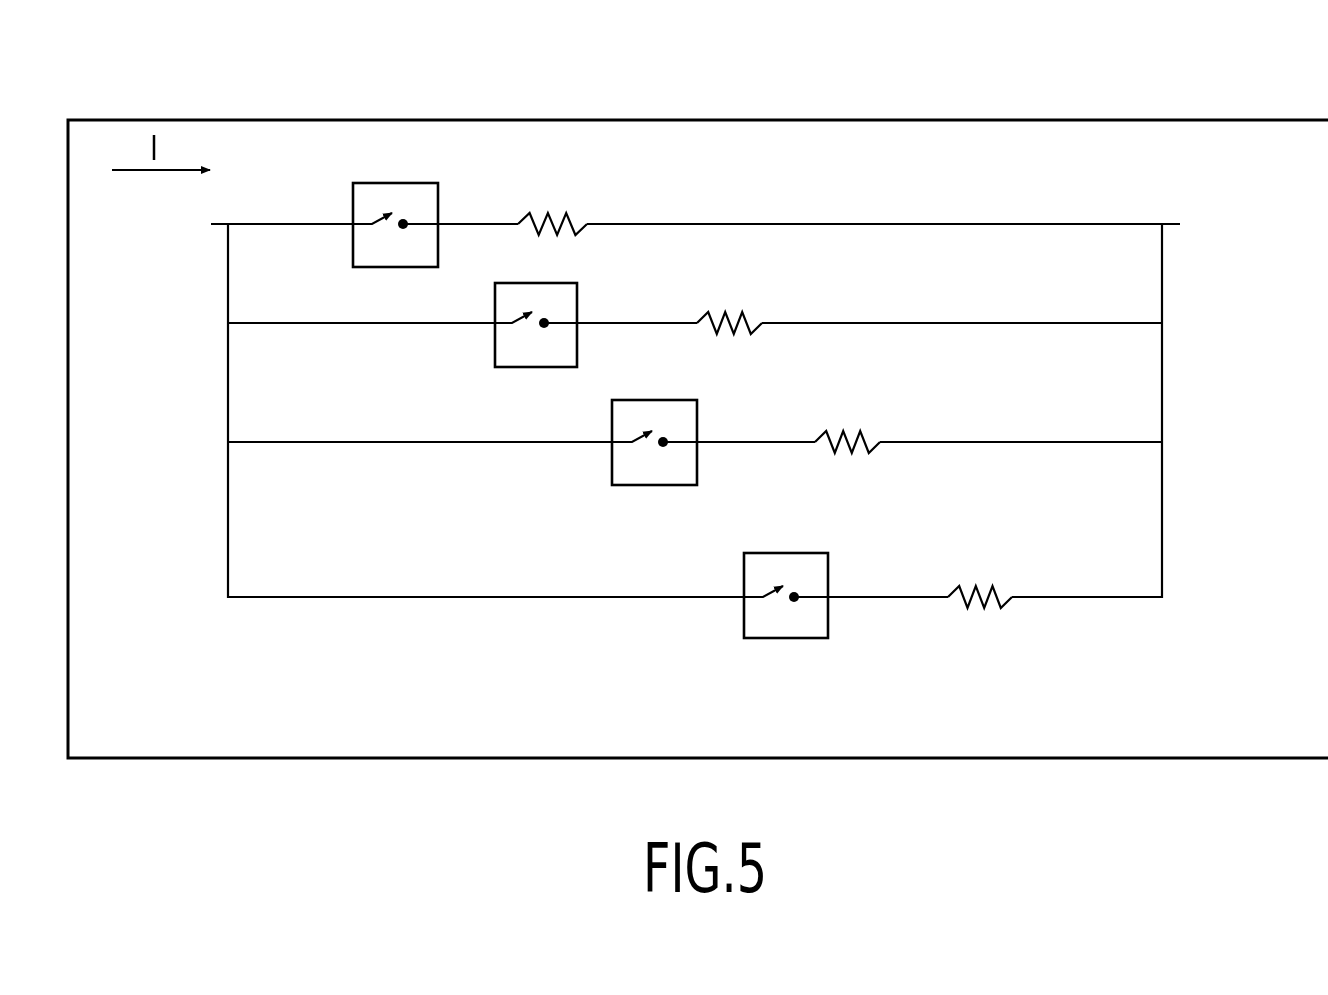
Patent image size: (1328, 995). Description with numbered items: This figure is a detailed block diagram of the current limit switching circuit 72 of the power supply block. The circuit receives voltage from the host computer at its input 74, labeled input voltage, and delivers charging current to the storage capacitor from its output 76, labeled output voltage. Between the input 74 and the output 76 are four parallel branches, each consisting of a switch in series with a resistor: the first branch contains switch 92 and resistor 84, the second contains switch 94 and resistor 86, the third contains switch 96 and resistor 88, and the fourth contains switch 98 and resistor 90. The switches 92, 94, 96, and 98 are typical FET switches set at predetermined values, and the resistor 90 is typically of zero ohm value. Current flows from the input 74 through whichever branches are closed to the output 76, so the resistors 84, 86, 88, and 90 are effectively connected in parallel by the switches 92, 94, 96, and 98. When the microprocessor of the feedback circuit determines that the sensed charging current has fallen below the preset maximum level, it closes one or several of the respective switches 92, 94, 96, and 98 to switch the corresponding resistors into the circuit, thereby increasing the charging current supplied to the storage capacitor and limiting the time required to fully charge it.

The current limit switching circuit 72 is at (820, 112).
The input 74 is at (228, 226).
The output 76 is at (1167, 225).
The resistor 84 is at (579, 222).
The resistor 86 is at (763, 322).
The resistor 88 is at (881, 441).
The resistor 90 is at (1013, 596).
The switch 92 is at (405, 183).
The switch 94 is at (498, 349).
The switch 96 is at (618, 472).
The switch 98 is at (755, 627).